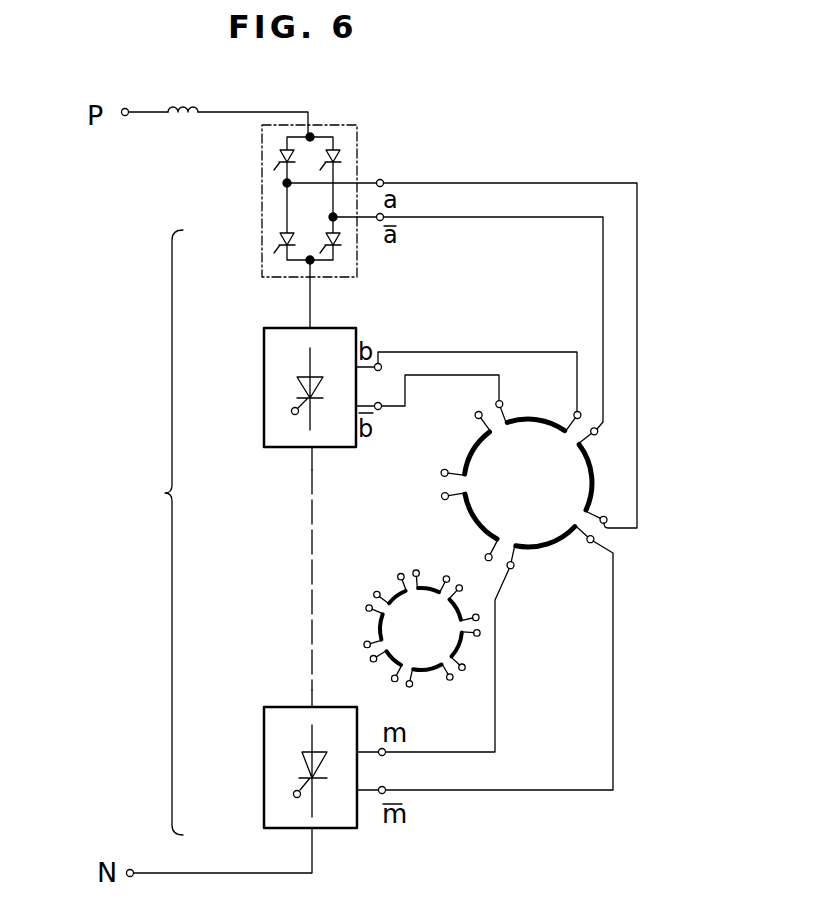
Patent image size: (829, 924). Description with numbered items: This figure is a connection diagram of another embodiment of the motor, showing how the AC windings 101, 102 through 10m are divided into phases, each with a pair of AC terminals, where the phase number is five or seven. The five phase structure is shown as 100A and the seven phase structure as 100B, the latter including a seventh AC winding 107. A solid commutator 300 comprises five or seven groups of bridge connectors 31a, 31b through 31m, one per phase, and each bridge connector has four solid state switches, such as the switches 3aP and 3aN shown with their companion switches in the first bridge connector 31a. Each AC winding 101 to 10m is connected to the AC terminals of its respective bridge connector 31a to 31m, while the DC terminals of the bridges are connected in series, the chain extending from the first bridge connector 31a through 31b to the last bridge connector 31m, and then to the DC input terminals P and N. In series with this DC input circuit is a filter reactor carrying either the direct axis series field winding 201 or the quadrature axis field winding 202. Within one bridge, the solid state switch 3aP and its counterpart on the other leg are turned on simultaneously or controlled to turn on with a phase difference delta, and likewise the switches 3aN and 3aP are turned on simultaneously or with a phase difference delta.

The direct axis series field winding 201 is at (196, 90).
The quadrature axis field winding 202 is at (176, 108).
The bridge connector 31a is at (310, 208).
The bridge connector 31b is at (263, 378).
The bridge connector 31m is at (265, 758).
The solid state switch 3aP is at (279, 156).
The solid state switch 3aN is at (283, 247).
The solid commutator 300 is at (152, 508).
The five phase structure 100A is at (568, 484).
The seven phase structure 100B is at (458, 628).
The AC winding 101 is at (594, 482).
The AC winding 102 is at (538, 403).
The AC winding 107 is at (462, 650).
The AC winding 10m is at (565, 546).